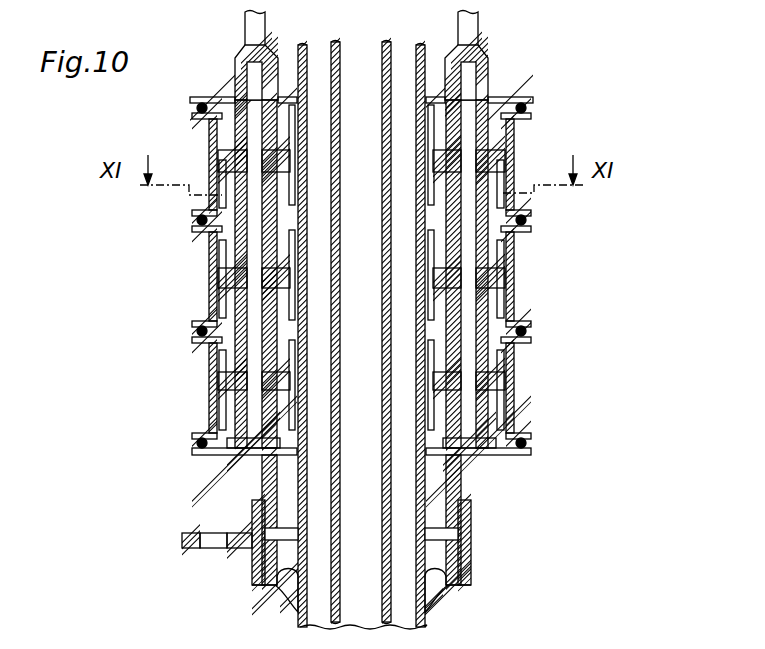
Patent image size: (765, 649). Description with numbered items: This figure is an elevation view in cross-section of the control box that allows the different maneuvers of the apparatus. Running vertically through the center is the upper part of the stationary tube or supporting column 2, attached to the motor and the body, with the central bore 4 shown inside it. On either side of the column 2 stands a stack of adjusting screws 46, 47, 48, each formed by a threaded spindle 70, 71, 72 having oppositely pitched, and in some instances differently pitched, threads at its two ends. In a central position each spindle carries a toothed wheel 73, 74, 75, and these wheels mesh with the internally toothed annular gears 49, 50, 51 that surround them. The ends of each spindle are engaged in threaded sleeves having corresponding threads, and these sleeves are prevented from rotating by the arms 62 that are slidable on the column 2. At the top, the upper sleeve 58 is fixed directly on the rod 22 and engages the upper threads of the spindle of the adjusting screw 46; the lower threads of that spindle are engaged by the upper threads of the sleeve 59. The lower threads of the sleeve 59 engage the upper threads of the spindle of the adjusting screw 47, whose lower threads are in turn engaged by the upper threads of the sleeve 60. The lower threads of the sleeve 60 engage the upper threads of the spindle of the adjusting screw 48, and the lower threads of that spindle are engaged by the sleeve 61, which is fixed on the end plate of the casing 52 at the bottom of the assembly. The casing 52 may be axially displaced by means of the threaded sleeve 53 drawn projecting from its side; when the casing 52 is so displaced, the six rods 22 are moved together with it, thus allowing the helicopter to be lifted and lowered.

The stationary tube 2 is at (425, 498).
The inner tube 4 is at (391, 475).
The rod 22 is at (252, 23).
The adjusting screw 46 is at (236, 172).
The adjusting screw 47 is at (238, 268).
The adjusting screw 48 is at (222, 380).
The internally toothed annular gear 49 is at (210, 140).
The internally toothed annular gear 50 is at (222, 305).
The internally toothed annular gear 51 is at (222, 410).
The casing 52 is at (250, 455).
The threaded sleeve 53 is at (242, 550).
The upper sleeve 58 is at (208, 100).
The sleeve 59 is at (242, 250).
The sleeve 60 is at (234, 361).
The sleeve 61 is at (236, 423).
The arm 62 is at (435, 222).
The threaded spindle 70 is at (485, 143).
The threaded spindle 71 is at (485, 258).
The threaded spindle 72 is at (485, 367).
The toothed wheel 73 is at (220, 160).
The toothed wheel 74 is at (513, 285).
The toothed wheel 75 is at (502, 390).